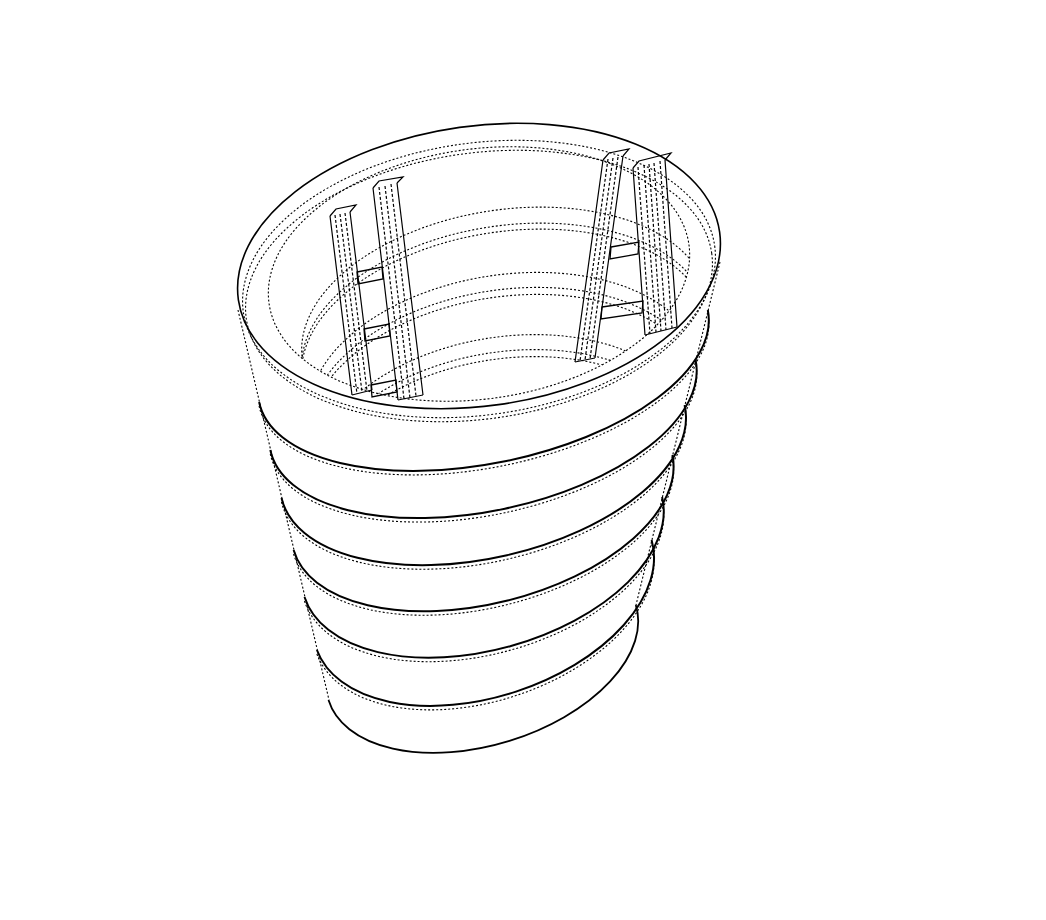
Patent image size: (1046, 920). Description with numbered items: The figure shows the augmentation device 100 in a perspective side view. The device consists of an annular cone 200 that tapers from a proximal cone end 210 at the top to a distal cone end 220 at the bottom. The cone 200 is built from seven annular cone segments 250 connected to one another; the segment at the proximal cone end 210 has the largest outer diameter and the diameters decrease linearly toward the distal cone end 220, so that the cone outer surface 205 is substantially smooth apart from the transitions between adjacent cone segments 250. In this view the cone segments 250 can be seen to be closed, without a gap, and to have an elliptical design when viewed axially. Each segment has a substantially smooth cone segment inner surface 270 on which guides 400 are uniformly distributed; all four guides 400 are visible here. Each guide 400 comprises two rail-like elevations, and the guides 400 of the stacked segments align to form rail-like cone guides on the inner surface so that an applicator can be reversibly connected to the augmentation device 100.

The augmentation device 100 is at (742, 125).
The annular cone 200 is at (830, 151).
The cone outer surface 205 is at (562, 428).
The proximal cone end 210 is at (177, 282).
The distal cone end 220 is at (238, 769).
The annular cone segments 250 is at (329, 700).
The cone segment inner surface 270 is at (455, 205).
The guides 400 is at (343, 385).